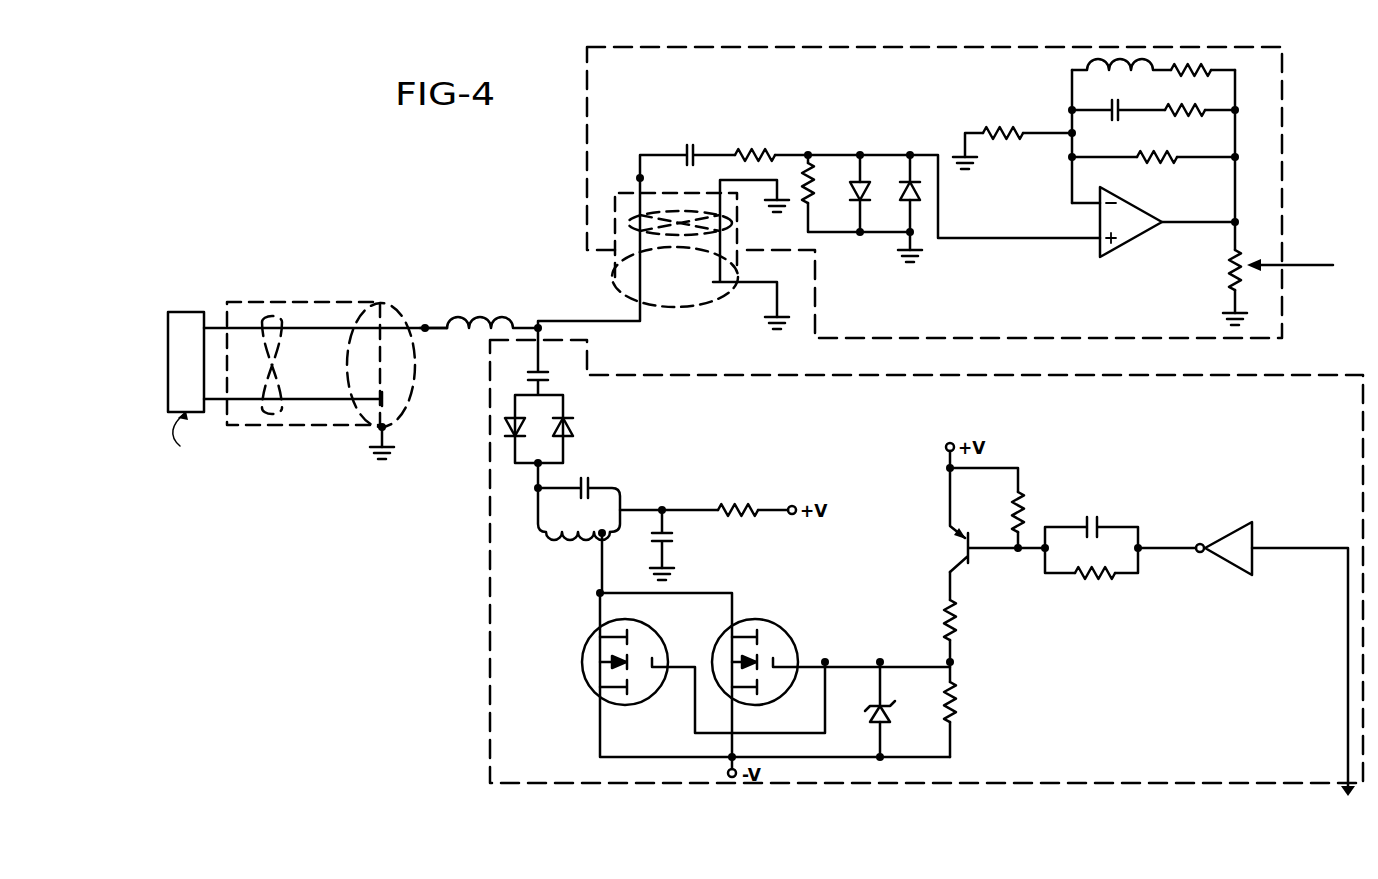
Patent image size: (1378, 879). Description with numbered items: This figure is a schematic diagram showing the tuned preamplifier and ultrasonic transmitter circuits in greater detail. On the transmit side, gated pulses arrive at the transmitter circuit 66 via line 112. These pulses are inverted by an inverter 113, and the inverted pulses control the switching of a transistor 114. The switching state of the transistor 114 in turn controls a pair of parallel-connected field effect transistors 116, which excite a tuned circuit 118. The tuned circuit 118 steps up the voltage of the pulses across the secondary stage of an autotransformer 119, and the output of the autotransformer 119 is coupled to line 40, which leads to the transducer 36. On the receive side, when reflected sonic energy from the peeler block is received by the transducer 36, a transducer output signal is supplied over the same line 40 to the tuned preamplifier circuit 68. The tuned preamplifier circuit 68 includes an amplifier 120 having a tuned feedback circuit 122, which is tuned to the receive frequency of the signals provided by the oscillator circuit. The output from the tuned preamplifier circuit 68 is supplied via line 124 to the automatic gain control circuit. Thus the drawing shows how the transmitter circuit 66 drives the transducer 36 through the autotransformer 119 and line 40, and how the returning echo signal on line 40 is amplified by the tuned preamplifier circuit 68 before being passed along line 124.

The transducer 36 is at (185, 320).
The line 40 is at (427, 333).
The transmitter circuit 66 is at (487, 657).
The tuned preamplifier circuit 68 is at (1290, 128).
The line 112 is at (1348, 654).
The inverter 113 is at (1228, 530).
The transistor 114 is at (973, 563).
The field effect transistors 116 is at (664, 648).
The tuned circuit 118 is at (596, 506).
The autotransformer 119 is at (566, 543).
The amplifier 120 is at (1121, 257).
The tuned feedback circuit 122 is at (1050, 75).
The line 124 is at (1300, 267).